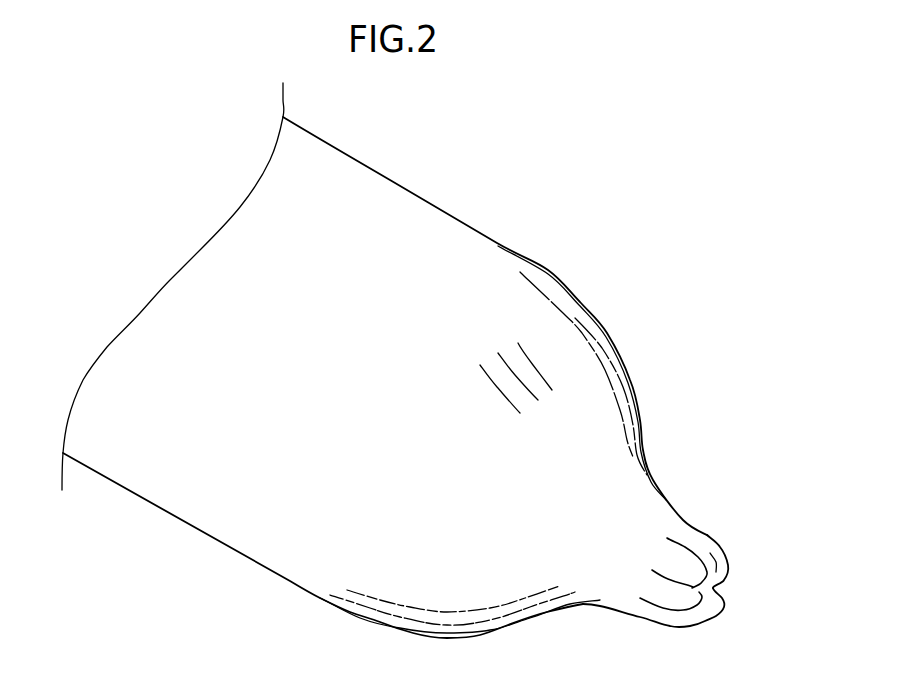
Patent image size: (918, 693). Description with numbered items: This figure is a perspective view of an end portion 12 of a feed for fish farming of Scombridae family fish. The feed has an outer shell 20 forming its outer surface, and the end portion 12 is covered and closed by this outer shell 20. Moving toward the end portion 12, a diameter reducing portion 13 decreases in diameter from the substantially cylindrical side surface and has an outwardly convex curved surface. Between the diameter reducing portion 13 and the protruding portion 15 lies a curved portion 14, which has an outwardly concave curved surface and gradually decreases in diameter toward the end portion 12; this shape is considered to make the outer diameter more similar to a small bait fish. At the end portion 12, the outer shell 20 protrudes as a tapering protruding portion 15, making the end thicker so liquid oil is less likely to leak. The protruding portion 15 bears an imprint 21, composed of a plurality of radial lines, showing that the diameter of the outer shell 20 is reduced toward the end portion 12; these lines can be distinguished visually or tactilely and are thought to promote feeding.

The end portion 12 is at (720, 627).
The diameter reducing portion 13 is at (608, 332).
The curved portion 14 is at (655, 462).
The protruding portion 15 is at (713, 535).
The outer shell 20 is at (168, 490).
The imprint 21 is at (682, 545).